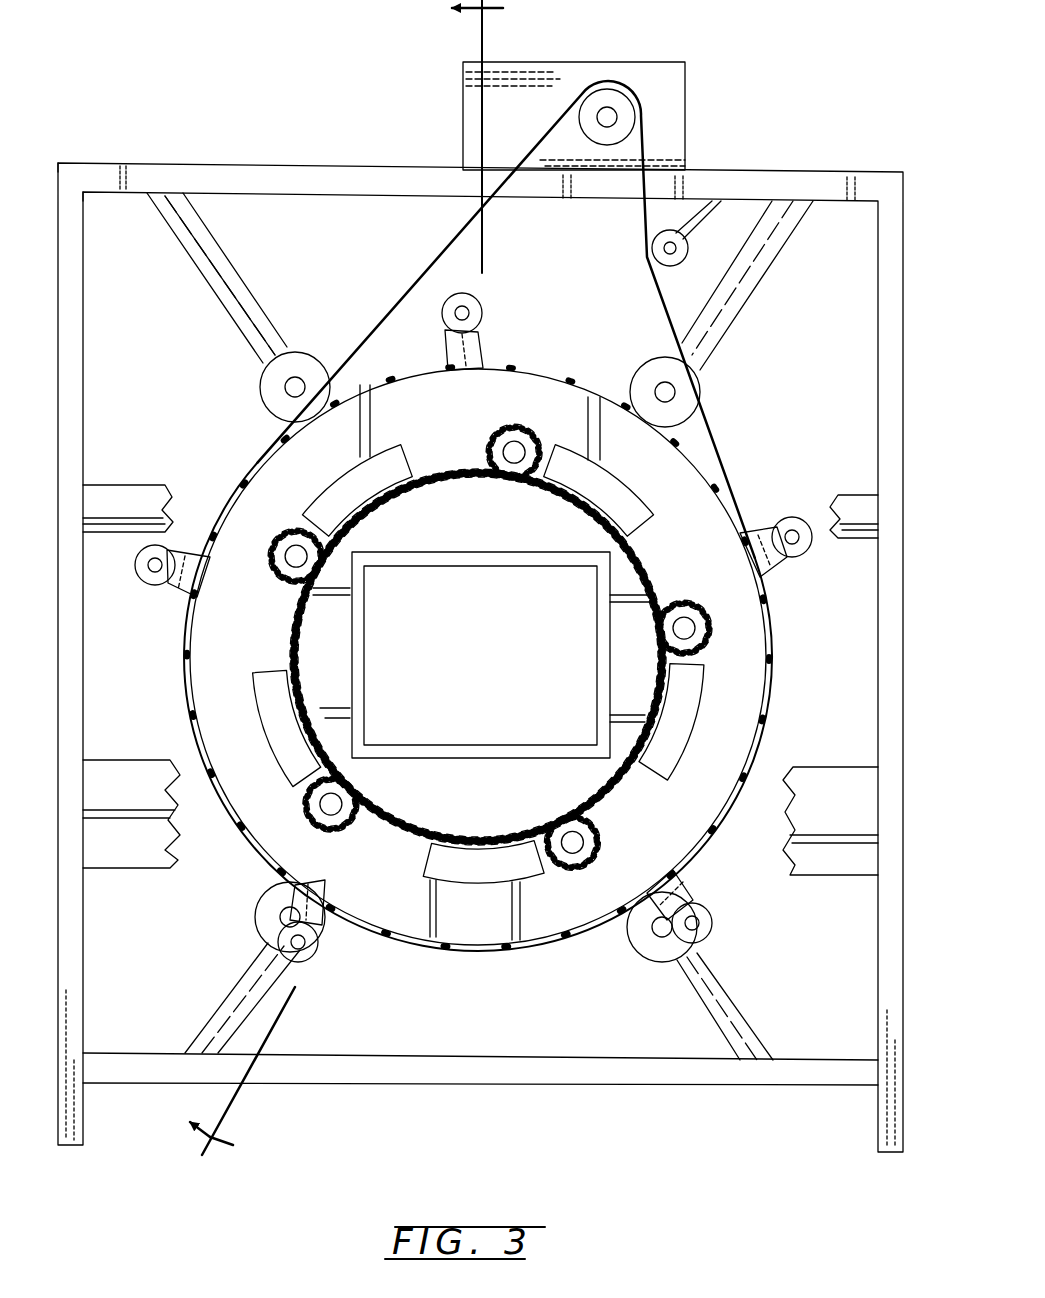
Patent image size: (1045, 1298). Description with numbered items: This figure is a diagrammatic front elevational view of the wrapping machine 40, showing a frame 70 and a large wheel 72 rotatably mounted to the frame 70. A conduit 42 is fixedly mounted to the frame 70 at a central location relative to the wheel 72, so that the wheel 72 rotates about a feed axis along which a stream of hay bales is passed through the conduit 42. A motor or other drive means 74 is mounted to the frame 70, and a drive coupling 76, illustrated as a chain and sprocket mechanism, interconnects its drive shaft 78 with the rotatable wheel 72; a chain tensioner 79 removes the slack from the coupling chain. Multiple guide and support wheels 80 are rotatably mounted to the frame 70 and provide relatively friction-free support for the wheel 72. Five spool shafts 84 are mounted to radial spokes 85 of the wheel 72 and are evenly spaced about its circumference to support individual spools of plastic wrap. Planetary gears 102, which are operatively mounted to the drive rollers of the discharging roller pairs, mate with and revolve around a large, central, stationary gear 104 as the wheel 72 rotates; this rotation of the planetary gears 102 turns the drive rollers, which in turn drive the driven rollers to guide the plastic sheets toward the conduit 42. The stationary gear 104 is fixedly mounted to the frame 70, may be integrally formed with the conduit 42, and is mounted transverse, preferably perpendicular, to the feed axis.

The wrapping machine 40 is at (800, 1118).
The conduit 42 is at (527, 560).
The frame 70 is at (253, 180).
The wheel 72 is at (775, 672).
The drive means 74 is at (663, 112).
The drive coupling 76 is at (718, 457).
The drive shaft 78 is at (607, 107).
The chain tensioner 79 is at (693, 227).
The guide and support wheels 80 is at (278, 395).
The spool shafts 84 is at (465, 312).
The radial spokes 85 is at (465, 357).
The planetary gears 102 is at (500, 427).
The stationary gear 104 is at (323, 667).